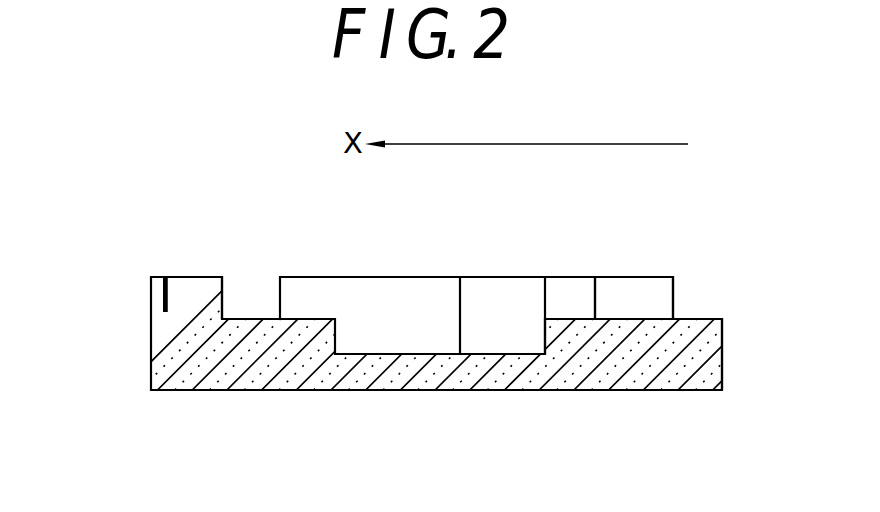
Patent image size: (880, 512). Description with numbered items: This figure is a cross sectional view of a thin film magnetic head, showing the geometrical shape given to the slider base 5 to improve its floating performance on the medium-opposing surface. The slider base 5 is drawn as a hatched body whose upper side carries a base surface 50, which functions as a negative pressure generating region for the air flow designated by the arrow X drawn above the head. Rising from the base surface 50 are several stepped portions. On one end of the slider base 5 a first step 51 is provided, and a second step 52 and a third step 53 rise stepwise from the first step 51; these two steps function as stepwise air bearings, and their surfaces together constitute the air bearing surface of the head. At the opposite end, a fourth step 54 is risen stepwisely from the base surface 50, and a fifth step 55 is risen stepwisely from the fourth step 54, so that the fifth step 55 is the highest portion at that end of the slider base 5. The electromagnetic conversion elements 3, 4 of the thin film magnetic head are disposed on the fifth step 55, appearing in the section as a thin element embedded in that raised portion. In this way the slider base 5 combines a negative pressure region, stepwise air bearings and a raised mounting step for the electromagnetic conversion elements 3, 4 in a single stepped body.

The electromagnetic conversion element 3 is at (150, 312).
The electromagnetic conversion element 4 is at (165, 295).
The slider base 5 is at (200, 392).
The base surface 50 is at (439, 354).
The first step 51 is at (690, 319).
The second step 52 is at (623, 277).
The third step 53 is at (634, 298).
The fourth step 54 is at (266, 319).
The fifth step 55 is at (202, 277).